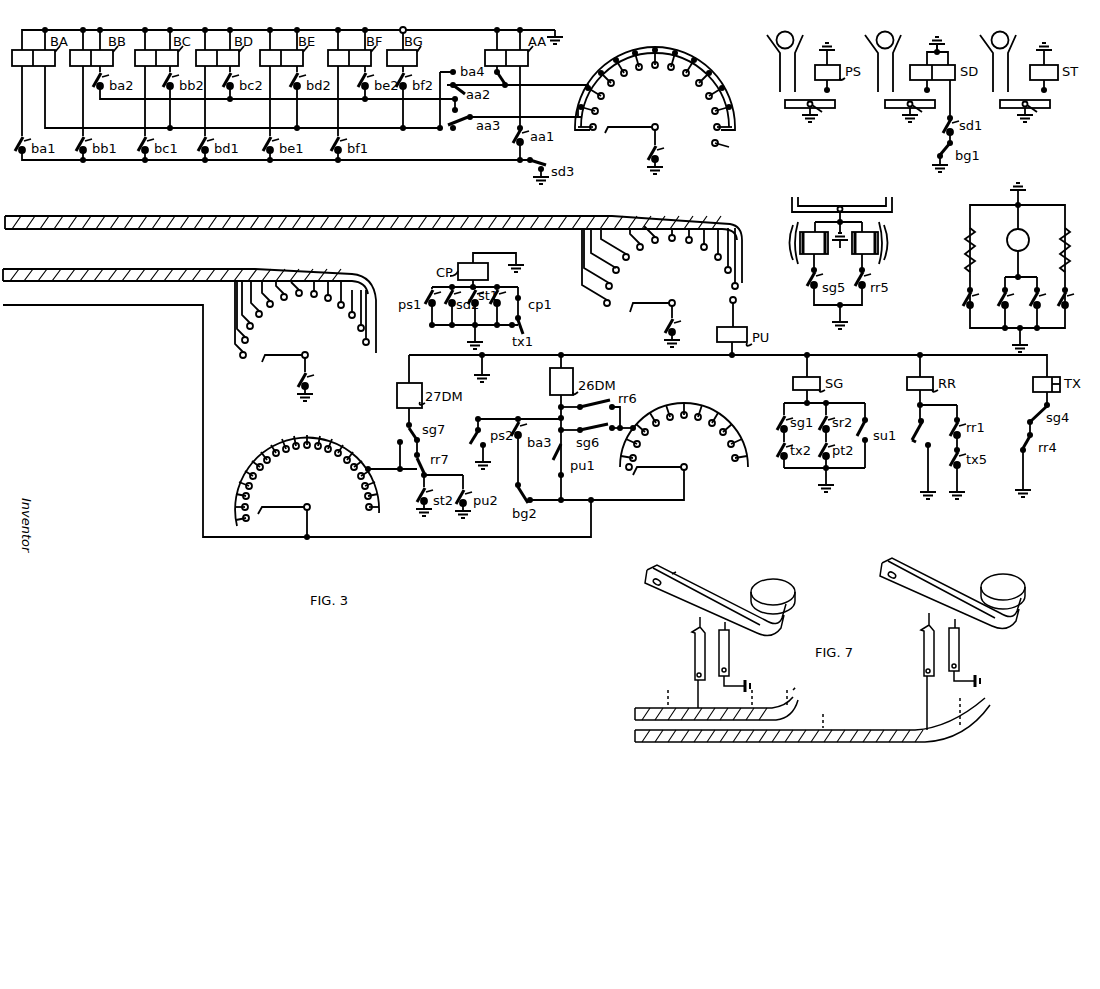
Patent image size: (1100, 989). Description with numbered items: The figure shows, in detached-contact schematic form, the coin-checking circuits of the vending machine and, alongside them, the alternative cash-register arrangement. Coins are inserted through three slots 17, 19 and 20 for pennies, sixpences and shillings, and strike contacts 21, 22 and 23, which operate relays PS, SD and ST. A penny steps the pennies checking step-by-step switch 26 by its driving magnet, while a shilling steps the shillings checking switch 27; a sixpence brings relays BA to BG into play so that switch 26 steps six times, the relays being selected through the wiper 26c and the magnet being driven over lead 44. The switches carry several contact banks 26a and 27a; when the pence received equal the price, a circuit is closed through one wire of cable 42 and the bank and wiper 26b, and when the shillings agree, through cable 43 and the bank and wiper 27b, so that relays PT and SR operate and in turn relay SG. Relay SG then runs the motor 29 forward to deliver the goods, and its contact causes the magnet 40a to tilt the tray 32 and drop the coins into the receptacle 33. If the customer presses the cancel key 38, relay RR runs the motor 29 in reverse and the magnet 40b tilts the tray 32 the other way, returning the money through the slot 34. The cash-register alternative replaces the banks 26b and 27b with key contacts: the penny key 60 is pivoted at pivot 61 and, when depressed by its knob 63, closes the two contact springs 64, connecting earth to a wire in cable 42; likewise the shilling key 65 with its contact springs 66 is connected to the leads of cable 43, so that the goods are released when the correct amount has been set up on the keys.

In FIG. 3, the coin slot 17 is at (775, 41).
In FIG. 3, the coin slot 19 is at (873, 41).
In FIG. 3, the coin slot 20 is at (988, 41).
In FIG. 3, the contact 21 is at (814, 112).
In FIG. 3, the contact 22 is at (914, 112).
In FIG. 3, the contact 23 is at (1030, 112).
In FIG. 3, the step-by-step switch 26 is at (658, 44).
In FIG. 3, the contact bank of switch 26 26a is at (670, 458).
In FIG. 3, the bank and wiper of switch 26 26b is at (656, 292).
In FIG. 3, the wiper of switch 26 26c is at (640, 120).
In FIG. 3, the step-by-step switch 27 is at (242, 462).
In FIG. 3, the contact bank of switch 27 27a is at (296, 498).
In FIG. 3, the bank and wiper of switch 27 27b is at (292, 346).
In FIG. 3, the motor 29 is at (1026, 220).
In FIG. 3, the tray 32 is at (818, 201).
In FIG. 3, the receptacle 33 is at (780, 240).
In FIG. 3, the slot 34 is at (897, 240).
In FIG. 3, the cancel key 38 is at (932, 458).
In FIG. 3, the magnet 40a is at (815, 250).
In FIG. 3, the magnet 40b is at (865, 250).
In FIG. 3, the cable 42 is at (85, 217).
In FIG. 7, the cable 42 is at (644, 708).
In FIG. 3, the cable 43 is at (85, 270).
In FIG. 7, the cable 43 is at (648, 742).
In FIG. 3, the lead 44 is at (85, 306).
In FIG. 7, the penny key 60 is at (700, 600).
In FIG. 7, the pivot 61 is at (677, 571).
In FIG. 7, the knob 63 is at (786, 591).
In FIG. 7, the contact springs 64 is at (718, 633).
In FIG. 7, the shilling key 65 is at (935, 586).
In FIG. 7, the contact springs 66 is at (948, 630).